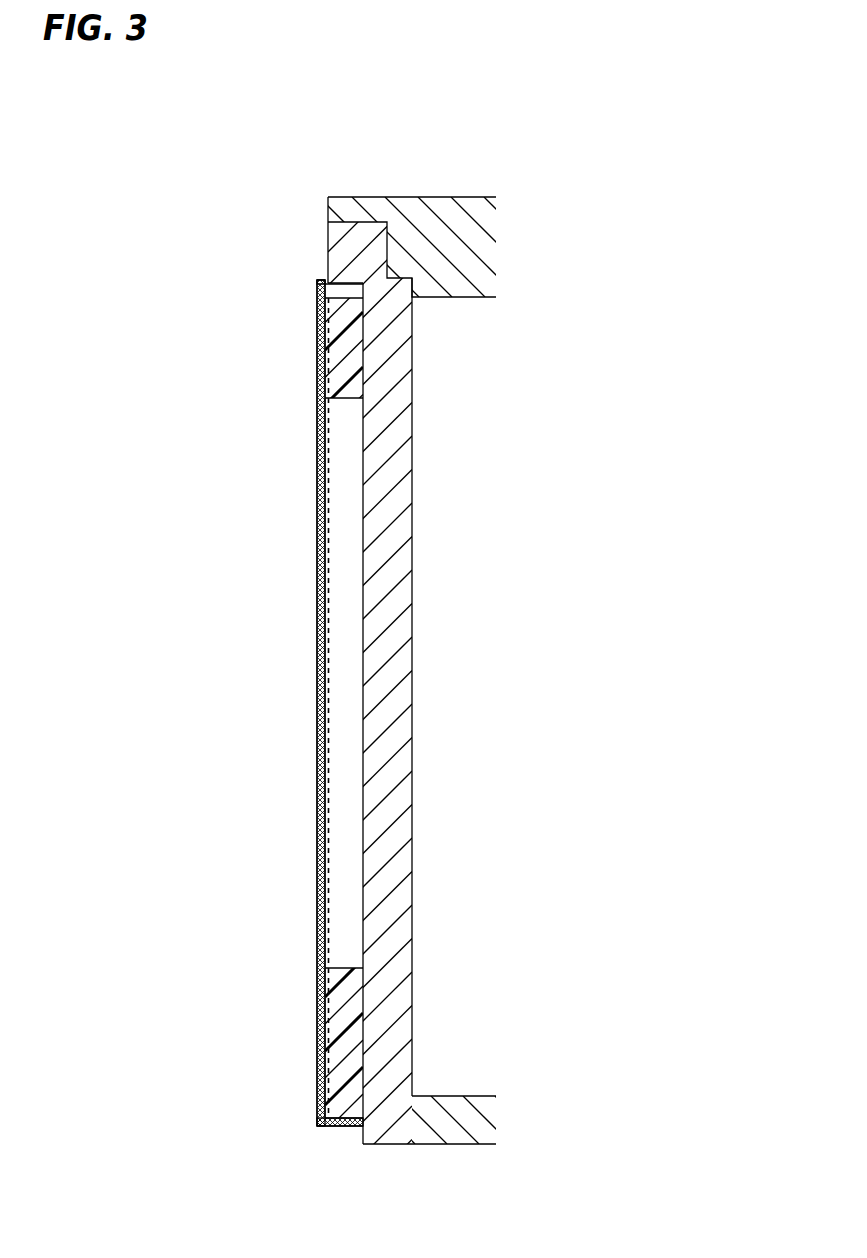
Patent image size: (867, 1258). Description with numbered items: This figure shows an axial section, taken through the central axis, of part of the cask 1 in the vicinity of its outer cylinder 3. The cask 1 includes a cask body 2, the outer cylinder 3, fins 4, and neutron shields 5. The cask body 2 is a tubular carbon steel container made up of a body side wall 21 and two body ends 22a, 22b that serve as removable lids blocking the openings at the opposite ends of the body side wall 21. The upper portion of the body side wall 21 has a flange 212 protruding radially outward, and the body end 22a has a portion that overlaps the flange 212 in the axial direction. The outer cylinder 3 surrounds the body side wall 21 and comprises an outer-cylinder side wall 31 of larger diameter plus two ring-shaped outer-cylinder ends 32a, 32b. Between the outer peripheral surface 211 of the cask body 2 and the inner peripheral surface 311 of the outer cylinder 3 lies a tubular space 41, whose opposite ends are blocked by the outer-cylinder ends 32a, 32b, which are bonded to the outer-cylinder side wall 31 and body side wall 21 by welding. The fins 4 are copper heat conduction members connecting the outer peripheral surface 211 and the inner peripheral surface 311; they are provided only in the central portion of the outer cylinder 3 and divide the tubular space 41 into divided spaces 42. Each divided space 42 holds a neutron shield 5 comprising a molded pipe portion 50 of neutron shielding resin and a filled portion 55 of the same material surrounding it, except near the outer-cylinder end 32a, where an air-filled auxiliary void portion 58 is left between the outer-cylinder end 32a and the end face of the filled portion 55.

The cask 1 is at (353, 108).
The cask body 2 is at (488, 180).
The body side wall 21 is at (393, 637).
The outer peripheral surface 211 is at (360, 772).
The flange 212 is at (340, 236).
The body end 22a is at (448, 227).
The body end 22b is at (455, 1128).
The outer cylinder 3 is at (312, 275).
The outer-cylinder side wall 31 is at (317, 556).
The inner peripheral surface 311 is at (327, 723).
The outer-cylinder end 32a is at (322, 278).
The outer-cylinder end 32b is at (343, 1128).
The fin 4 is at (338, 643).
The tubular space 41 is at (247, 438).
The divided space 42 is at (343, 525).
The neutron shield 5 is at (238, 1048).
The molded pipe portion 50 is at (316, 1014).
The filled portion 55 is at (347, 1050).
The auxiliary void portion 58 is at (340, 289).